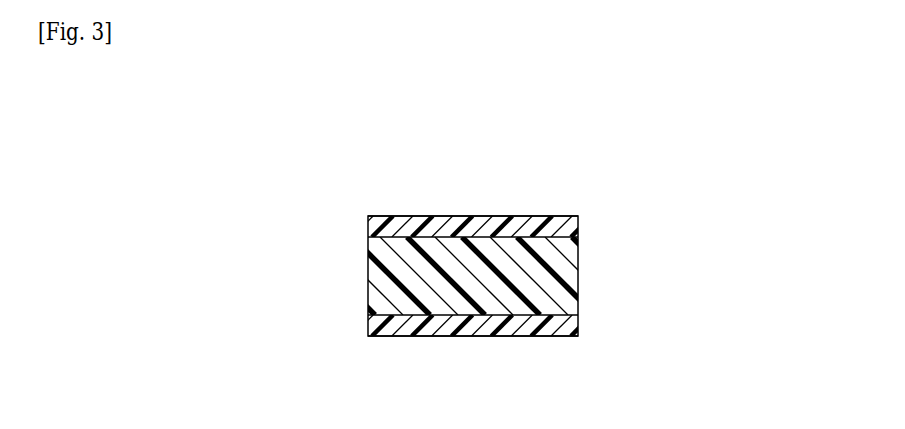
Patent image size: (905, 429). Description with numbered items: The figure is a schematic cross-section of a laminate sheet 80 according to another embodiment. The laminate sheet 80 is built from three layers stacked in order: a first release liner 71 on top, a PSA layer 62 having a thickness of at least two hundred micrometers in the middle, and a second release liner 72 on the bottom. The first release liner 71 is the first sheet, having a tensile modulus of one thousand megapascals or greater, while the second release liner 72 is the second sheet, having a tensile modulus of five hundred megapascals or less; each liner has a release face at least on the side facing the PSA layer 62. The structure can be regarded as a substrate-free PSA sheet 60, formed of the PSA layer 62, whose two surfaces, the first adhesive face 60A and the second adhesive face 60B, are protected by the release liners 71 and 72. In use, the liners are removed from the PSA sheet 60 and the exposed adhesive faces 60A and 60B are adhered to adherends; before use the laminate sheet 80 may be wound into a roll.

The laminate sheet 80 is at (342, 166).
The PSA sheet 60 is at (500, 281).
The first adhesive face 60A is at (419, 228).
The second adhesive face 60B is at (439, 330).
The first release liner 71 is at (579, 223).
The PSA layer 62 is at (579, 257).
The second release liner 72 is at (579, 322).